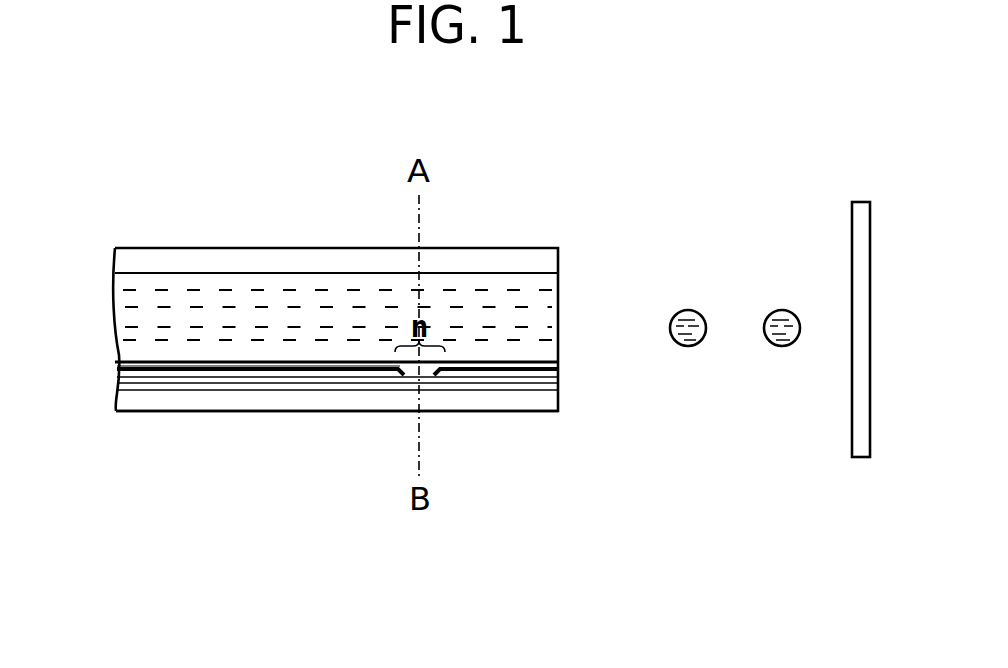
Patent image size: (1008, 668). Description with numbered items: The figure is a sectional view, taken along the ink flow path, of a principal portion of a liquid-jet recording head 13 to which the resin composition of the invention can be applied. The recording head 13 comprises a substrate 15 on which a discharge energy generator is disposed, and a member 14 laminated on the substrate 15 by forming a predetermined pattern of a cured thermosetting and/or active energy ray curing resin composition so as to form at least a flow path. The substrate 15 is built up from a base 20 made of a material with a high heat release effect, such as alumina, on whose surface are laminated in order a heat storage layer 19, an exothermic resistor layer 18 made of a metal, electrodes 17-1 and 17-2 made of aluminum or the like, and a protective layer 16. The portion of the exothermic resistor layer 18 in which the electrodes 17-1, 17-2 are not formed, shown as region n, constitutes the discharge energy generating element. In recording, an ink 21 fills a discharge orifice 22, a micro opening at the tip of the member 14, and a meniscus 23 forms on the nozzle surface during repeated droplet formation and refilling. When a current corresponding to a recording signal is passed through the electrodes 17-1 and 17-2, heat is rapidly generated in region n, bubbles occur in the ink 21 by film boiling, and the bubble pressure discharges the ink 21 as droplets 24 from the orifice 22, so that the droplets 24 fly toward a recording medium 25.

The recording head 13 is at (242, 248).
The member 14 is at (326, 274).
The substrate 15 is at (95, 362).
The protective layer 16 is at (155, 366).
The electrode 17-1 is at (222, 372).
The electrode 17-2 is at (525, 378).
The exothermic resistor layer 18 is at (297, 380).
The heat storage layer 19 is at (353, 390).
The base 20 is at (465, 412).
The ink 21 is at (151, 282).
The discharge orifice 22 is at (568, 356).
The meniscus 23 is at (562, 320).
The droplets 24 is at (803, 293).
The recording medium 25 is at (852, 235).